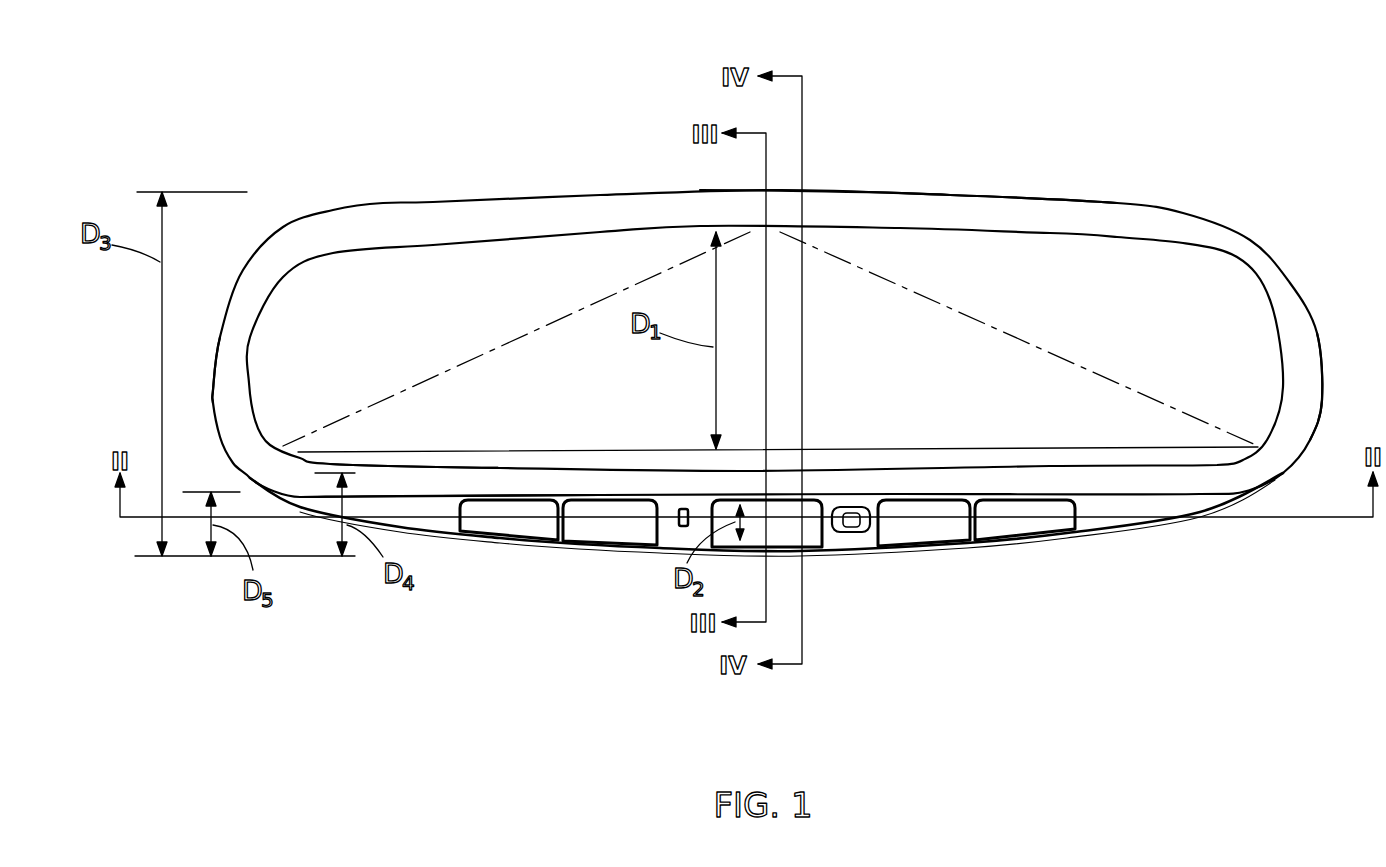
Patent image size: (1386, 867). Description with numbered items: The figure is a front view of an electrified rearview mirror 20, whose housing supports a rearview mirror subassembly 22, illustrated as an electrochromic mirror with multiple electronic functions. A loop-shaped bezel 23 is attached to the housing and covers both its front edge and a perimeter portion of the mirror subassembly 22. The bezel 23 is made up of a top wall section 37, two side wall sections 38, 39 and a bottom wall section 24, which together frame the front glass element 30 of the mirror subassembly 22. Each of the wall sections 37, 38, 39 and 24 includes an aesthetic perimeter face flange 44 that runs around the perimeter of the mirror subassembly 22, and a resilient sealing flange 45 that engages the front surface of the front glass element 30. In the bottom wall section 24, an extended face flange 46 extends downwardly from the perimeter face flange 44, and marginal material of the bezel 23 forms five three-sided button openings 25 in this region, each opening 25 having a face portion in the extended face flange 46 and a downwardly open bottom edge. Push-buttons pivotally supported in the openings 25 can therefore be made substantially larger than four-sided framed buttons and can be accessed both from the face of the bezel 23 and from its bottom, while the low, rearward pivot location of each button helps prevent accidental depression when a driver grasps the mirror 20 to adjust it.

The electrified rearview mirror 20 is at (972, 130).
The rearview mirror subassembly 22 is at (520, 276).
The bezel 23 is at (433, 200).
The bottom wall section 24 is at (430, 508).
The button openings 25 is at (485, 498).
The front glass element 30 is at (413, 331).
The top wall section 37 is at (836, 224).
The side wall section 38 is at (213, 404).
The side wall section 39 is at (1283, 419).
The aesthetic perimeter face flange 44 is at (386, 494).
The resilient sealing flange 45 is at (442, 464).
The extended face flange 46 is at (670, 538).